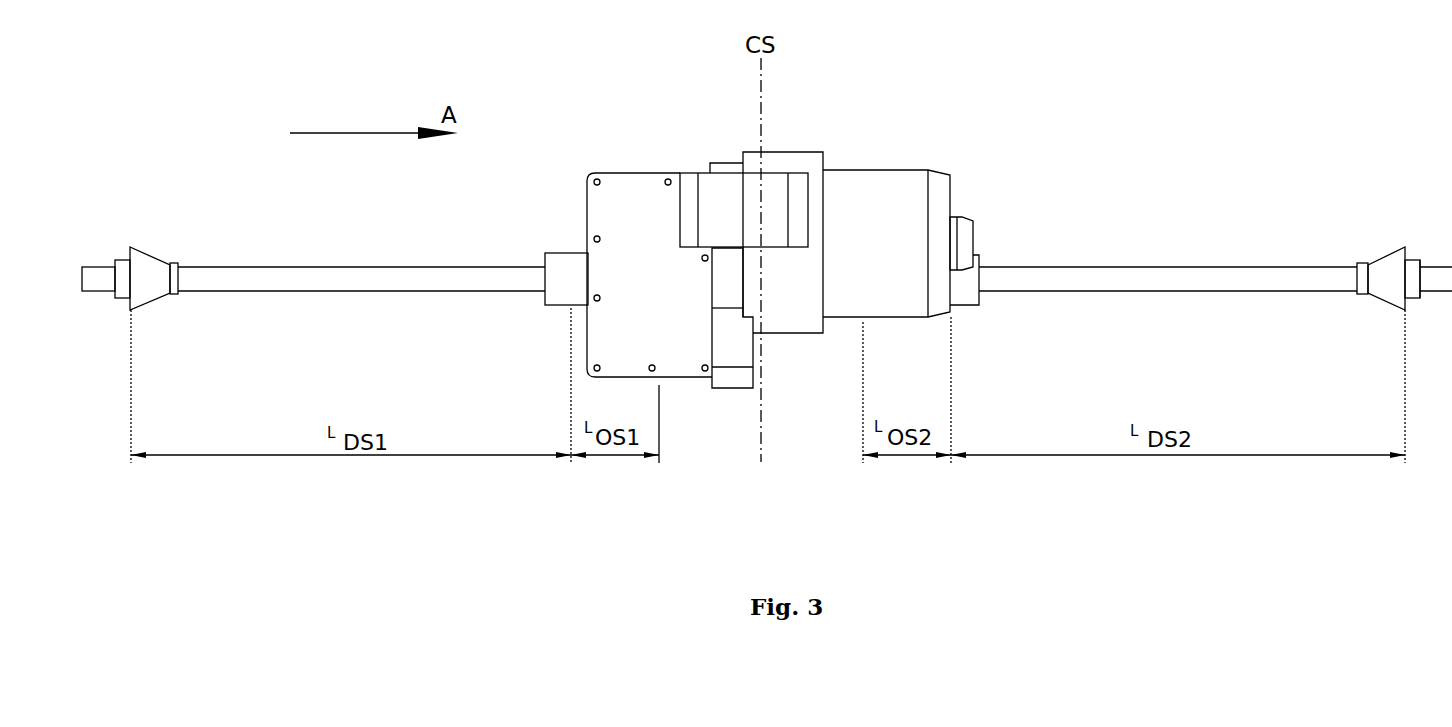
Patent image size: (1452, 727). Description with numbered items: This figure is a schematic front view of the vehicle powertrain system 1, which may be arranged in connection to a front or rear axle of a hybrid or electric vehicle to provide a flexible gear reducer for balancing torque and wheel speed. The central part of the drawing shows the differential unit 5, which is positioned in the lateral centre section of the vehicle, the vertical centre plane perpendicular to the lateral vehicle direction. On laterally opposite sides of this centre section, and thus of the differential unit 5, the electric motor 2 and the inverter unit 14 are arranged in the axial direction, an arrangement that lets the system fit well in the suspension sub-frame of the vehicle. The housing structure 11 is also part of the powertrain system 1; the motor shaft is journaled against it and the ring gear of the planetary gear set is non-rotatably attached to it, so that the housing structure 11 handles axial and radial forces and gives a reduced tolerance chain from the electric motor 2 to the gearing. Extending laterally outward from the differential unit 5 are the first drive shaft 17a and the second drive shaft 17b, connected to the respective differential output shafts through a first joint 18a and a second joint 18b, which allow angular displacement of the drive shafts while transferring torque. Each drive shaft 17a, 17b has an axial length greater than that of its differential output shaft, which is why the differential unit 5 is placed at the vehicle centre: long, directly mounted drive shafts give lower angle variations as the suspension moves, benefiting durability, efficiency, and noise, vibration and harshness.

The vehicle powertrain system 1 is at (1003, 61).
The electric motor 2 is at (877, 170).
The differential unit 5 is at (684, 100).
The housing structure 11 is at (785, 150).
The inverter unit 14 is at (638, 172).
The first drive shaft 17a is at (362, 265).
The second drive shaft 17b is at (1158, 265).
The first joint 18a is at (572, 252).
The second joint 18b is at (993, 253).